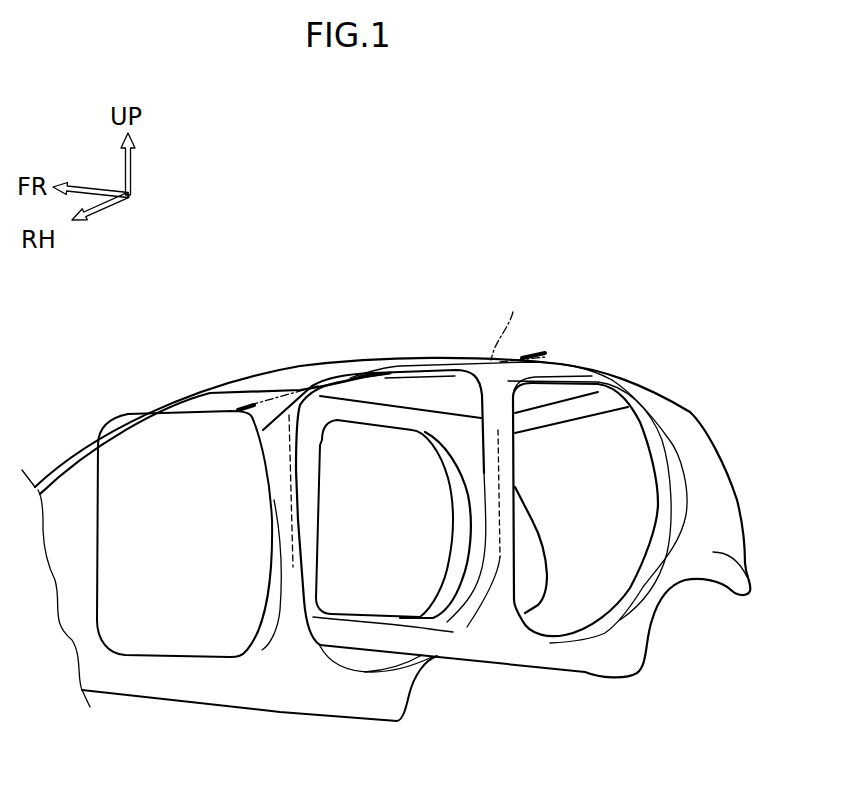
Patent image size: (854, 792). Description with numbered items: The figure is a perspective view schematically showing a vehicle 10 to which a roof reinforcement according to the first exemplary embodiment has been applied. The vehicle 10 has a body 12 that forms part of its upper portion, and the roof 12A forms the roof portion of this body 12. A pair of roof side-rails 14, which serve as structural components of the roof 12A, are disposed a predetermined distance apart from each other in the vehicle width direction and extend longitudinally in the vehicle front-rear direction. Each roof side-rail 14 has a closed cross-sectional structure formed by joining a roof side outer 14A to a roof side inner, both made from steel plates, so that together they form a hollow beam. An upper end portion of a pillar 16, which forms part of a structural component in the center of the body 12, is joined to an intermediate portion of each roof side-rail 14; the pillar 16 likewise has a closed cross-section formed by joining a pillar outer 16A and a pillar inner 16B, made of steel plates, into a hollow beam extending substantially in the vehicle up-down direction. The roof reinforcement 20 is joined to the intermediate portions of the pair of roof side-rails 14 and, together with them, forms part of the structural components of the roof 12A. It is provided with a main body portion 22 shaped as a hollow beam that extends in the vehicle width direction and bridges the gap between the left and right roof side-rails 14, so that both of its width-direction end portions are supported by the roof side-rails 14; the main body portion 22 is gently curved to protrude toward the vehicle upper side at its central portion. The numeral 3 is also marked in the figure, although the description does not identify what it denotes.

The sensor 3 is at (247, 407).
The vehicle 10 is at (705, 295).
The body 12 is at (683, 405).
The roof 12A is at (397, 345).
The roof side-rail 14 is at (617, 377).
The roof side outer 14A is at (590, 364).
The pillar 16 is at (327, 463).
The pillar outer 16A is at (507, 513).
The pillar inner 16B is at (310, 503).
The roof reinforcement 20 is at (371, 372).
The main body portion 22 is at (394, 378).